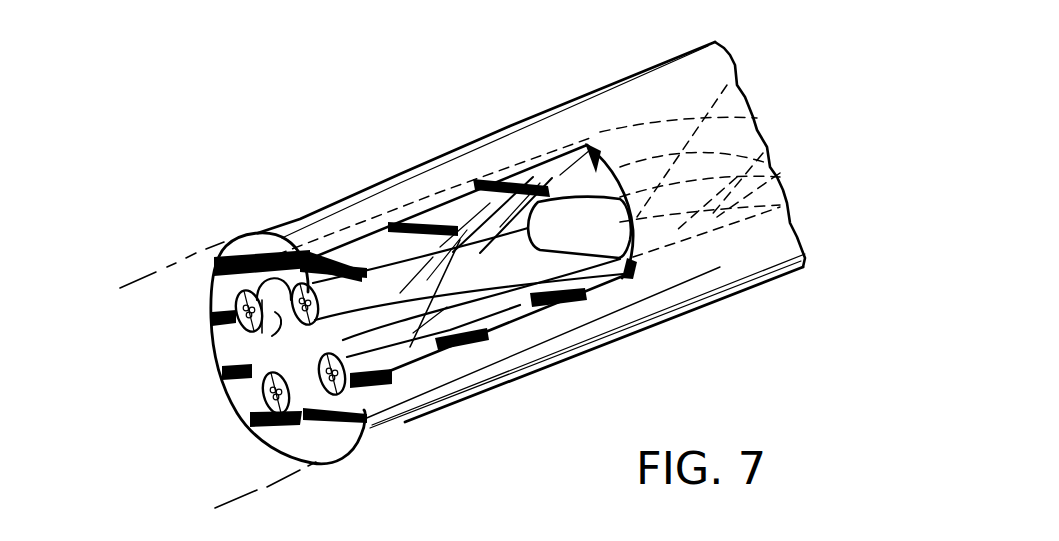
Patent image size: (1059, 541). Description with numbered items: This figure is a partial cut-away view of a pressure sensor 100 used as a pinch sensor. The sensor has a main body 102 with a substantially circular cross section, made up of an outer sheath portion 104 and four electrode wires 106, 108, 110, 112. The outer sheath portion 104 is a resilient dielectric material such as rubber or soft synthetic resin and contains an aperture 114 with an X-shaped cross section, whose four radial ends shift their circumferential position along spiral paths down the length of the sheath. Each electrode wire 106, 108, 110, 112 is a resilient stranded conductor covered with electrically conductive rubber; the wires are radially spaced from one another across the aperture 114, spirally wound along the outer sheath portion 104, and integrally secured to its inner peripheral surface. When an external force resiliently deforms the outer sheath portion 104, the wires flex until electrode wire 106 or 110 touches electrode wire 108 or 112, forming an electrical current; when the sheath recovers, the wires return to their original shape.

The pressure sensor 100 is at (192, 144).
The main body 102 is at (508, 120).
The outer sheath portion 104 is at (303, 227).
The electrode wire 106 is at (257, 358).
The electrode wire 108 is at (433, 268).
The electrode wire 110 is at (382, 353).
The electrode wire 112 is at (303, 374).
The aperture 114 is at (260, 358).